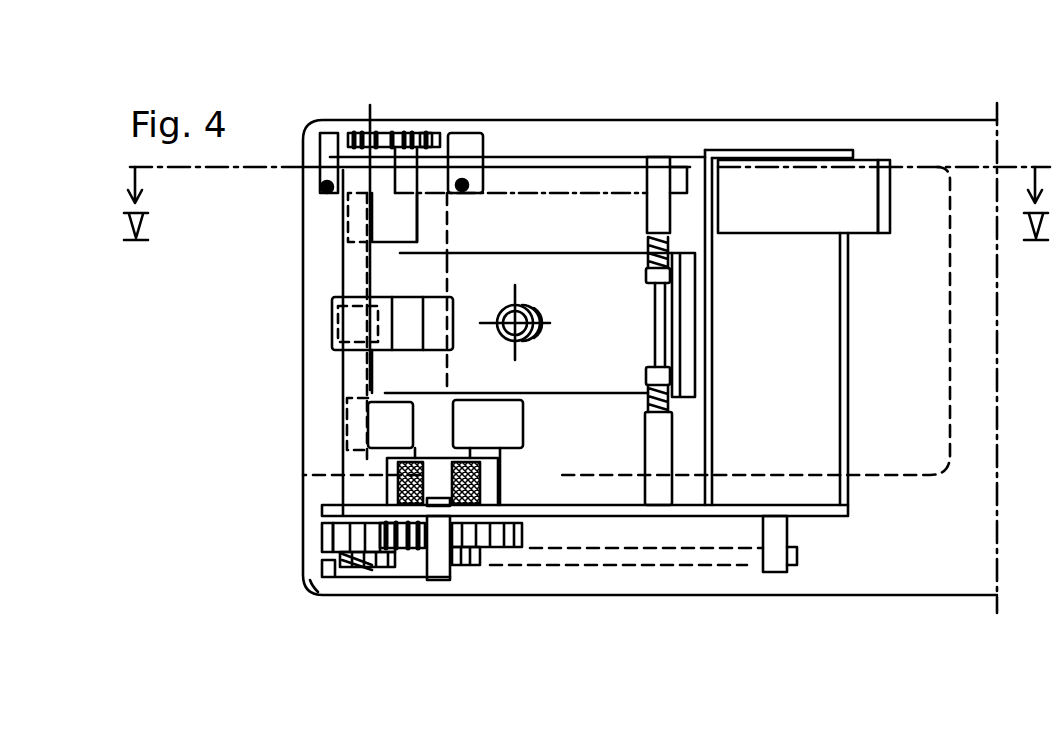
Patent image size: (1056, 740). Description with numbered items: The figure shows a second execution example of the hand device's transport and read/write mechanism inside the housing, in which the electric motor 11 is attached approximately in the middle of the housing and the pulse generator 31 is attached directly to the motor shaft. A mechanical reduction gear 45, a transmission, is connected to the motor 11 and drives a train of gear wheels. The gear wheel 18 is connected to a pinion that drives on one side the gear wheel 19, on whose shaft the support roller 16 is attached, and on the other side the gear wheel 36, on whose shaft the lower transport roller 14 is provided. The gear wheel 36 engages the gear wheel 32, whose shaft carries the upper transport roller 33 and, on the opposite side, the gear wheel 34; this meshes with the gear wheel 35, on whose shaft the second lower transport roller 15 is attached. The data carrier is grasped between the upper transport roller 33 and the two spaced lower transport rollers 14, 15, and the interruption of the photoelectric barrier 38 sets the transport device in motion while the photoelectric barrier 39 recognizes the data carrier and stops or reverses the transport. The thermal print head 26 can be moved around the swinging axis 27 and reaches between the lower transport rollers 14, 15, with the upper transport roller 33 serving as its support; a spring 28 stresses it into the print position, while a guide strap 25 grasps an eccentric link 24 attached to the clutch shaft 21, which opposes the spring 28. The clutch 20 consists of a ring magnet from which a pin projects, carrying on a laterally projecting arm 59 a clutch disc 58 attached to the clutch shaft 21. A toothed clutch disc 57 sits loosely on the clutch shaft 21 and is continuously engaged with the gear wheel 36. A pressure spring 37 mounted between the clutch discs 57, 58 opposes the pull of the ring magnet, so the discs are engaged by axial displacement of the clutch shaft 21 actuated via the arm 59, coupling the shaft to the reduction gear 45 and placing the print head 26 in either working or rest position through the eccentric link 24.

The electric motor 11 is at (806, 465).
The lower transport roller 14 is at (385, 420).
The second lower transport roller 15 is at (390, 207).
The support roller 16 is at (507, 427).
The gear wheel 18 is at (467, 565).
The gear wheel 19 is at (503, 547).
The clutch 20 is at (398, 484).
The clutch shaft 21 is at (358, 262).
The eccentric link 24 is at (345, 320).
The guide strap 25 is at (353, 346).
The thermal print head 26 is at (578, 283).
The swinging axis 27 is at (655, 248).
The spring 28 is at (530, 302).
The pulse generator 31 is at (867, 180).
The gear wheel 32 is at (440, 582).
The upper transport roller 33 is at (437, 217).
The gear wheel 34 is at (425, 133).
The gear wheel 35 is at (394, 229).
The gear wheel 36 is at (393, 575).
The pressure spring 37 is at (335, 556).
The photoelectric barrier 38 is at (327, 187).
The photoelectric barrier 39 is at (462, 185).
The reduction gear 45 is at (667, 558).
The clutch disc 57 is at (322, 530).
The clutch disc 58 is at (325, 577).
The arm 59 is at (318, 590).